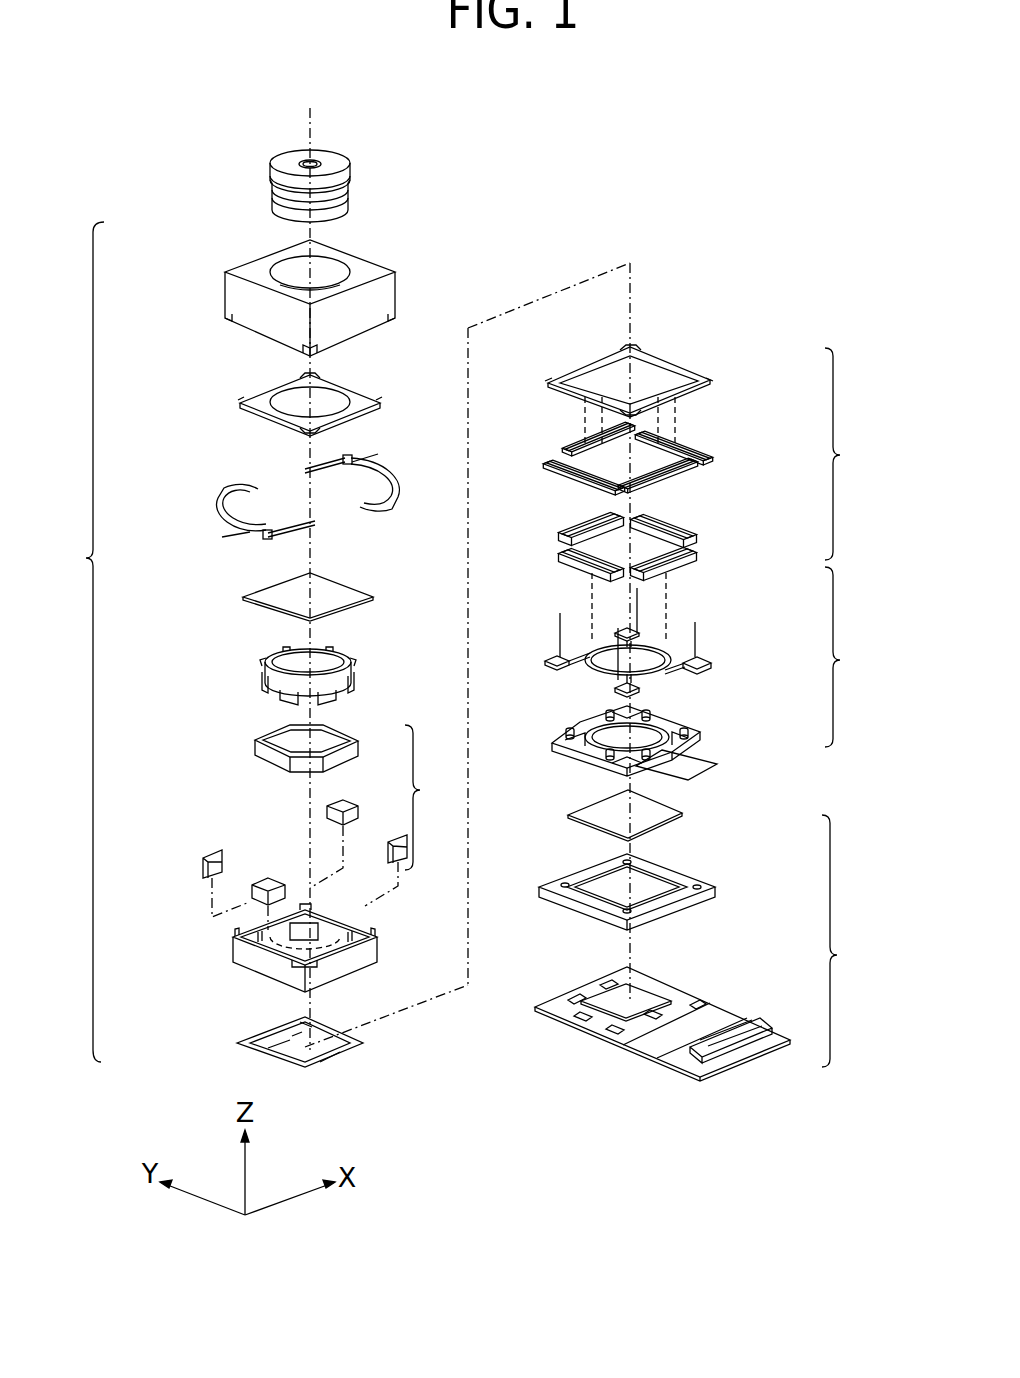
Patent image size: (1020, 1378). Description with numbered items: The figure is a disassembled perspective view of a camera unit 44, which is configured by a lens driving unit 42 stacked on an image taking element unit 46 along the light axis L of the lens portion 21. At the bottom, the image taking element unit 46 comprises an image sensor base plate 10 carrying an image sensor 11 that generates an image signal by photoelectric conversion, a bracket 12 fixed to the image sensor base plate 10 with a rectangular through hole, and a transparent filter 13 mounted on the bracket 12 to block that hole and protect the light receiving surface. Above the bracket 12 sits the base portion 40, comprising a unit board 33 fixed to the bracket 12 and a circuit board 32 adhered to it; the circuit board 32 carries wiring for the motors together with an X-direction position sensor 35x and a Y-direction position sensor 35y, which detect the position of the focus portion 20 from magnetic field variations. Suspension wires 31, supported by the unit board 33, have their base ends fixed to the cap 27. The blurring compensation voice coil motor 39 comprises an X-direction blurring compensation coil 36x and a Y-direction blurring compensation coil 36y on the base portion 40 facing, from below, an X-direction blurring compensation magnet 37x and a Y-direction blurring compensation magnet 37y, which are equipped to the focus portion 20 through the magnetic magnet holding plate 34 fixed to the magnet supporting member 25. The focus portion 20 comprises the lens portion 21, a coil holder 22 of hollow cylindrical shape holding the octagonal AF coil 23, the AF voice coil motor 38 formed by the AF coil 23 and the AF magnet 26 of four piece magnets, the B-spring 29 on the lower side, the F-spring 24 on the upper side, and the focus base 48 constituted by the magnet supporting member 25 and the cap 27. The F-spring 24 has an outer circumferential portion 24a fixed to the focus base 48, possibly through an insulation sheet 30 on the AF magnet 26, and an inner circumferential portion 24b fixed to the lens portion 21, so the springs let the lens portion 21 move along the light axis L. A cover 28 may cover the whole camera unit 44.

The image sensor base plate 10 is at (550, 1003).
The image sensor 11 is at (655, 985).
The bracket 12 is at (680, 873).
The filter 13 is at (593, 810).
The focus portion 20 is at (73, 642).
The lens portion 21 is at (290, 157).
The coil holder 22 is at (266, 688).
The AF coil 23 is at (258, 766).
The F-spring 24 is at (292, 462).
The outer circumferential portion 24a is at (365, 458).
The inner circumferential portion 24b is at (392, 482).
The magnet supporting member 25 is at (250, 962).
The AF magnet 26 is at (345, 797).
The cap 27 is at (263, 392).
The cover 28 is at (370, 262).
The B-spring 29 is at (323, 1060).
The insulation sheet 30 is at (270, 590).
The suspension wire 31 is at (556, 635).
The circuit board 32 is at (680, 672).
The unit board 33 is at (585, 717).
The magnet holding plate 34 is at (660, 355).
The X-direction position sensor 35x is at (709, 650).
The Y-direction position sensor 35y is at (655, 692).
The X-direction blurring compensation coil 36x is at (565, 562).
The Y-direction blurring compensation coil 36y is at (570, 525).
The X-direction blurring compensation magnet 37x is at (565, 455).
The Y-direction blurring compensation magnet 37y is at (565, 447).
The AF voice coil motor 38 is at (433, 797).
The blurring compensation voice coil motor 39 is at (855, 454).
The base portion 40 is at (855, 657).
The lens driving unit 42 is at (655, 253).
The camera unit 44 is at (702, 110).
The image taking element unit 46 is at (851, 941).
The focus base 48 is at (179, 392).
The light axis L is at (316, 134).